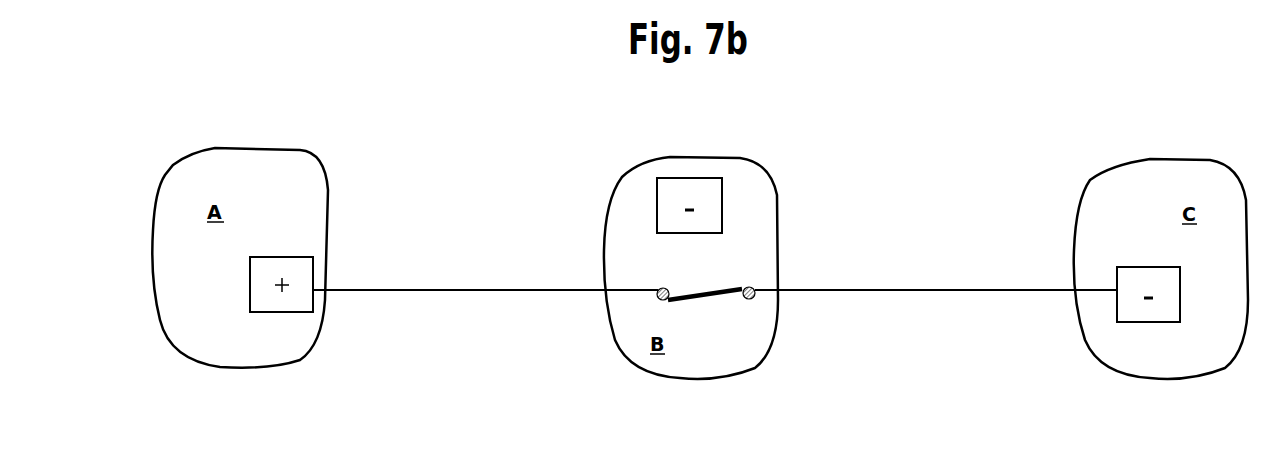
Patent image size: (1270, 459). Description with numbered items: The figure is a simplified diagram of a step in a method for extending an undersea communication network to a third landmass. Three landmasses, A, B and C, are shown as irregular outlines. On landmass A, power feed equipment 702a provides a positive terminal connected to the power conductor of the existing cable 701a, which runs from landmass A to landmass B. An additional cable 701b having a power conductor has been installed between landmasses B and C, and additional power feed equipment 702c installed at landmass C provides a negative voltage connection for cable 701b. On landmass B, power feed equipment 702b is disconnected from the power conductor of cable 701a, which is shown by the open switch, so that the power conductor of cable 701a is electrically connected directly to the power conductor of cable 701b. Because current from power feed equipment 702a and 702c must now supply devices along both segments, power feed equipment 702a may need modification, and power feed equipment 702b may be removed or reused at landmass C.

The power feed equipment 702a is at (251, 192).
The power feed equipment 702b is at (764, 168).
The power feed equipment 702c is at (1113, 202).
The cable 701a is at (485, 214).
The cable 701b is at (936, 214).